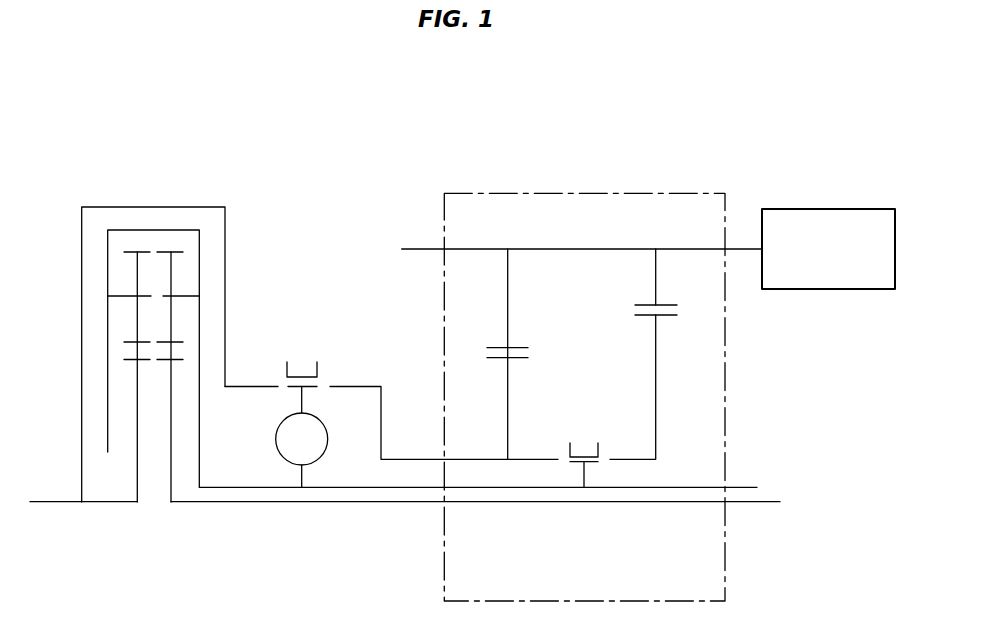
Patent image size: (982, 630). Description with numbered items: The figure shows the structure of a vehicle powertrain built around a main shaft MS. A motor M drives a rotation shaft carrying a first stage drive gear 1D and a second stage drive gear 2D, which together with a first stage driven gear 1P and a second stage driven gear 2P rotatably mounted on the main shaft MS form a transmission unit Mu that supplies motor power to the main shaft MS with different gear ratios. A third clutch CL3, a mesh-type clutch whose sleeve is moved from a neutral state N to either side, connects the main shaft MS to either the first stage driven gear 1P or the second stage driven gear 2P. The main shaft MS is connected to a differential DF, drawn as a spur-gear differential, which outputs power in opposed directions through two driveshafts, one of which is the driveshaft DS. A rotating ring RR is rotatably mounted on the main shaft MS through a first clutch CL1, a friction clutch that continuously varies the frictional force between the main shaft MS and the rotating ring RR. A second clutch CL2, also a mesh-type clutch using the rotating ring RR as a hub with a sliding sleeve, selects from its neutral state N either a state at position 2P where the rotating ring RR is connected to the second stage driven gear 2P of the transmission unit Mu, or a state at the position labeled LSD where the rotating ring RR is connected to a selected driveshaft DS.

The differential DF is at (157, 228).
The limited slip differential position LSD is at (252, 362).
The second clutch CL2 is at (303, 328).
The neutral position N is at (444, 387).
The second stage driven gear 2P is at (498, 359).
The rotating ring RR is at (300, 392).
The first clutch CL1 is at (302, 450).
The main shaft MS is at (742, 487).
The driveshaft DS is at (113, 502).
The transmission unit Mu is at (592, 193).
The second stage drive gear 2D is at (498, 347).
The first stage drive gear 1D is at (650, 303).
The first stage driven gear 1P is at (647, 318).
The third clutch CL3 is at (583, 408).
The motor M is at (828, 249).